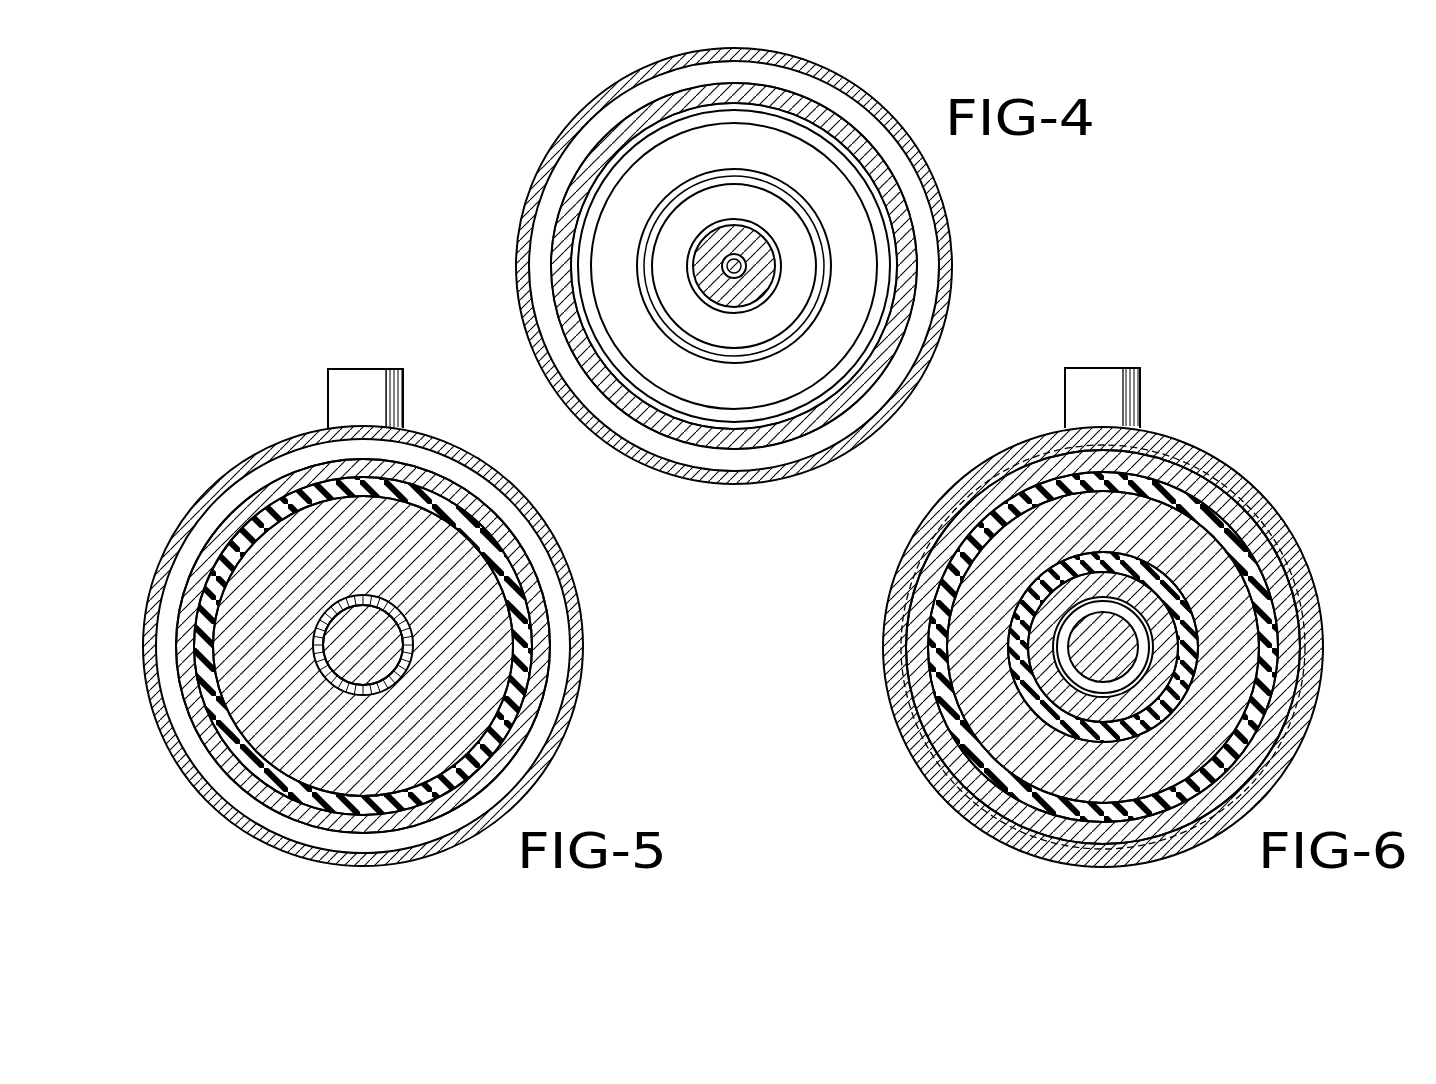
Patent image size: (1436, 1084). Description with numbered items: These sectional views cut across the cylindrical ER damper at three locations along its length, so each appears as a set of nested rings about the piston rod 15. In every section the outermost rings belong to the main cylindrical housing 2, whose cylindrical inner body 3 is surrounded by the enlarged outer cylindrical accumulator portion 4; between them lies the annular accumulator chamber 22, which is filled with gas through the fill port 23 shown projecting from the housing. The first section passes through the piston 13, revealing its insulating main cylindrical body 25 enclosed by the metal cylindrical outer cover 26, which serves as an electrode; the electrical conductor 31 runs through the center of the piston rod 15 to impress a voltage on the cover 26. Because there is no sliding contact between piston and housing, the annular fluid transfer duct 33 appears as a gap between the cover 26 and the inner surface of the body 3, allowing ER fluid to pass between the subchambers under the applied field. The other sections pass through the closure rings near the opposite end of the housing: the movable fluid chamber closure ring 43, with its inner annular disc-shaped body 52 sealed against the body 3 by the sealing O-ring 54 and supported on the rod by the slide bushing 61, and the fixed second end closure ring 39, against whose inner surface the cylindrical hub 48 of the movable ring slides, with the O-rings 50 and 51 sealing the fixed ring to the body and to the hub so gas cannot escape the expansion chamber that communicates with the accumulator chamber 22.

In FIG. 4, the main cylindrical housing 2 is at (612, 85).
In FIG. 5, the main cylindrical housing 2 is at (237, 462).
In FIG. 6, the main cylindrical housing 2 is at (1260, 475).
In FIG. 4, the cylindrical inner body 3 is at (918, 250).
In FIG. 5, the cylindrical inner body 3 is at (543, 628).
In FIG. 4, the outer cylindrical accumulator portion 4 is at (587, 107).
In FIG. 5, the outer cylindrical accumulator portion 4 is at (213, 487).
In FIG. 6, the outer cylindrical accumulator portion 4 is at (1275, 520).
In FIG. 4, the piston 13 is at (598, 198).
In FIG. 4, the piston rod 15 is at (765, 245).
In FIG. 5, the piston rod 15 is at (395, 669).
In FIG. 6, the piston rod 15 is at (1120, 620).
In FIG. 4, the annular accumulator chamber 22 is at (924, 206).
In FIG. 5, the annular accumulator chamber 22 is at (555, 582).
In FIG. 5, the fill port 23 is at (360, 378).
In FIG. 6, the fill port 23 is at (1105, 375).
In FIG. 4, the main cylindrical body 25 is at (615, 230).
In FIG. 4, the cylindrical outer cover 26 is at (615, 172).
In FIG. 4, the electrical conductor 31 is at (740, 272).
In FIG. 4, the annular fluid transfer duct 33 is at (572, 265).
In FIG. 6, the second end closure ring 39 is at (966, 567).
In FIG. 5, the fluid chamber closure ring 43 is at (243, 582).
In FIG. 6, the fluid chamber closure ring 43 is at (1132, 704).
In FIG. 6, the cylindrical hub 48 is at (1163, 658).
In FIG. 6, the O-ring 50 is at (980, 530).
In FIG. 6, the O-ring 51 is at (1020, 623).
In FIG. 5, the inner annular disc-shaped body 52 is at (242, 625).
In FIG. 5, the sealing O-ring 54 is at (487, 538).
In FIG. 5, the slide bushing 61 is at (330, 612).